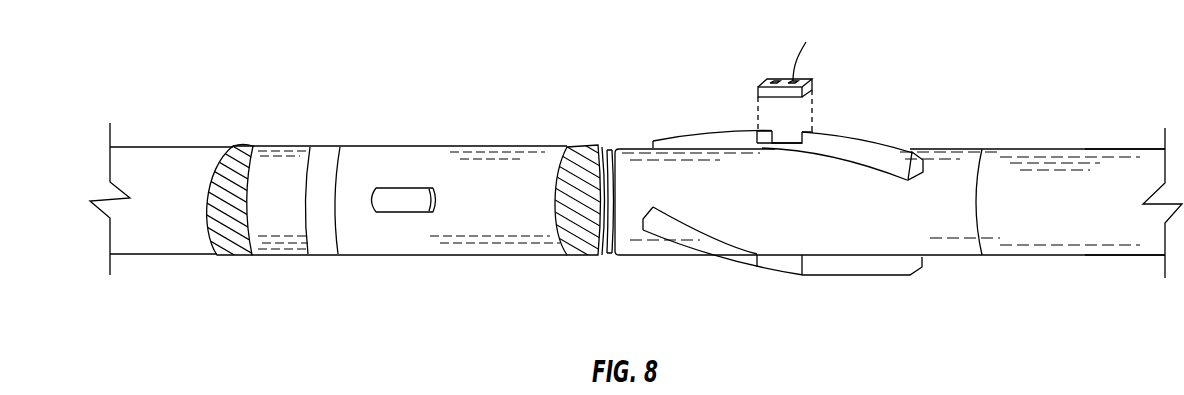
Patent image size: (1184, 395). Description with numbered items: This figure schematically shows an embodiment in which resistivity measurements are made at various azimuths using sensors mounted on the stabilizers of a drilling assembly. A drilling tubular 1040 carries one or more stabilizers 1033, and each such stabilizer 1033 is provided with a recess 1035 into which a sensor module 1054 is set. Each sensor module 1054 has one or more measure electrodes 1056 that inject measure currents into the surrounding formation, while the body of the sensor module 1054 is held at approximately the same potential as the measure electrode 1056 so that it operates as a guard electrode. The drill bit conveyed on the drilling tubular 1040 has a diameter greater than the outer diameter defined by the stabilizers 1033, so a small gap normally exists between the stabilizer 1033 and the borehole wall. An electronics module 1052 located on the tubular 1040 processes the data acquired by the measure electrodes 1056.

The stabilizer 1033 is at (877, 134).
The recess 1035 is at (768, 131).
The drilling tubular 1040 is at (1028, 147).
The electronics module 1052 is at (407, 188).
The sensor module 1054 is at (758, 90).
The measure electrode 1056 is at (775, 81).